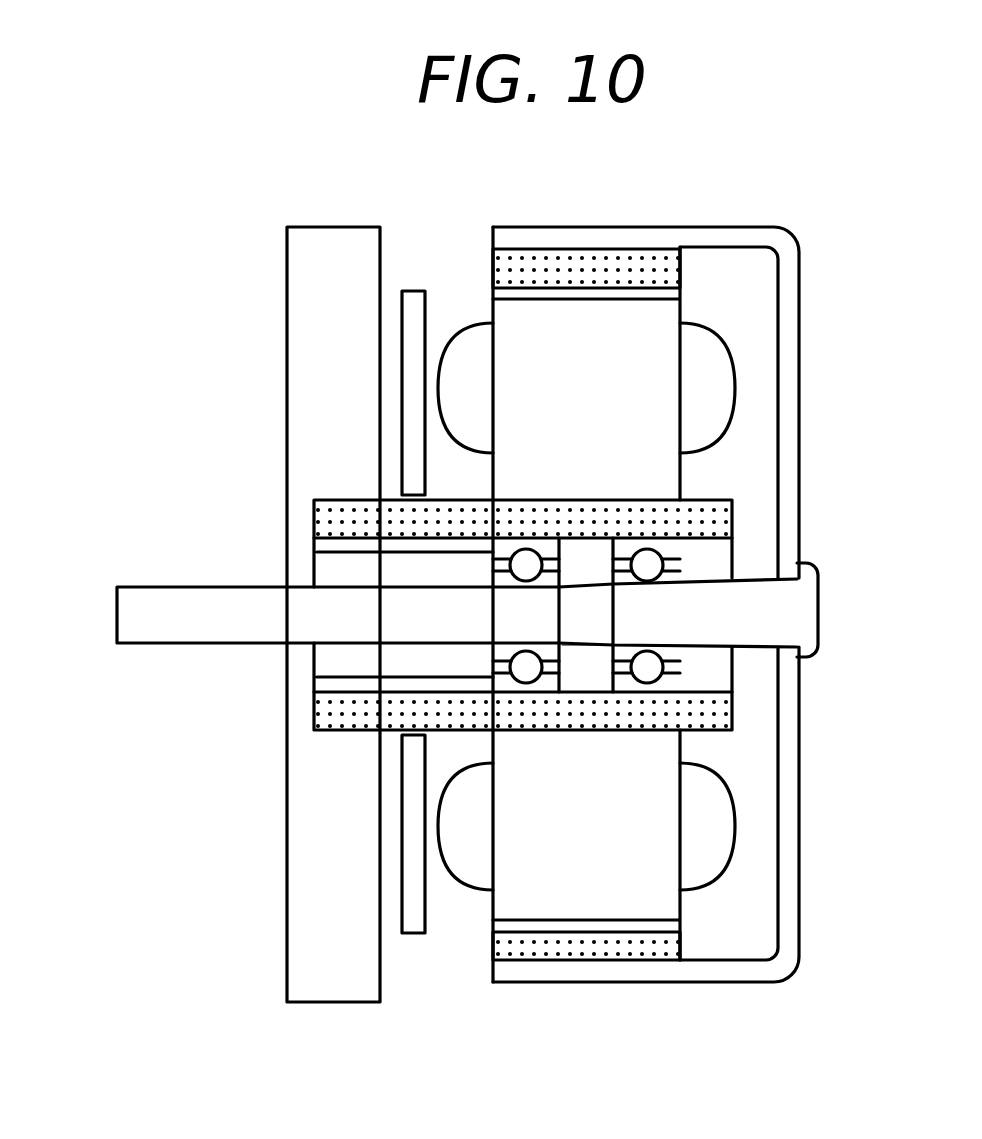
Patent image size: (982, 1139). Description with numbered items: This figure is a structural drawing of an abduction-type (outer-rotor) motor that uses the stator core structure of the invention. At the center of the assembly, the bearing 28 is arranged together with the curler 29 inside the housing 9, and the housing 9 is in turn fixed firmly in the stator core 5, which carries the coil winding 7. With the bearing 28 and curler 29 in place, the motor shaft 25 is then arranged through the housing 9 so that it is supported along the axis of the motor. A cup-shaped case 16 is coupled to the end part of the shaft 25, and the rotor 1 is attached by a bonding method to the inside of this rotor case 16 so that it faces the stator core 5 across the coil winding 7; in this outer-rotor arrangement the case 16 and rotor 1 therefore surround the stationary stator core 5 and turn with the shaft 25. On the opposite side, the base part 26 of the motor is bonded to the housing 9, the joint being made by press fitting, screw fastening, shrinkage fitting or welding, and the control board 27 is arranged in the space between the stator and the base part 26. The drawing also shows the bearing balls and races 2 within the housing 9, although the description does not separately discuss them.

The rotor 1 is at (637, 272).
The bearing 2 is at (652, 558).
The stator core 5 is at (643, 818).
The coil winding 7 is at (726, 397).
The housing 9 is at (700, 710).
The stator case 16 is at (788, 287).
The motor shaft 25 is at (152, 630).
The base part 26 is at (323, 358).
The control board 27 is at (415, 903).
The bearing 28 is at (317, 540).
The curler 29 is at (578, 665).